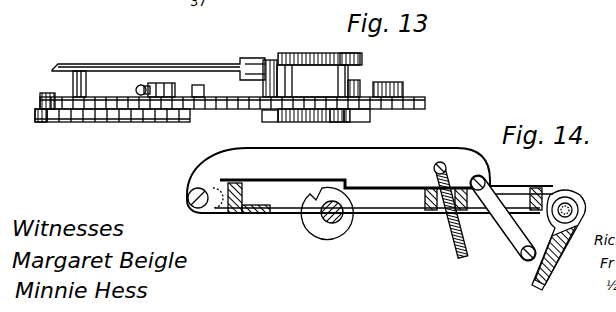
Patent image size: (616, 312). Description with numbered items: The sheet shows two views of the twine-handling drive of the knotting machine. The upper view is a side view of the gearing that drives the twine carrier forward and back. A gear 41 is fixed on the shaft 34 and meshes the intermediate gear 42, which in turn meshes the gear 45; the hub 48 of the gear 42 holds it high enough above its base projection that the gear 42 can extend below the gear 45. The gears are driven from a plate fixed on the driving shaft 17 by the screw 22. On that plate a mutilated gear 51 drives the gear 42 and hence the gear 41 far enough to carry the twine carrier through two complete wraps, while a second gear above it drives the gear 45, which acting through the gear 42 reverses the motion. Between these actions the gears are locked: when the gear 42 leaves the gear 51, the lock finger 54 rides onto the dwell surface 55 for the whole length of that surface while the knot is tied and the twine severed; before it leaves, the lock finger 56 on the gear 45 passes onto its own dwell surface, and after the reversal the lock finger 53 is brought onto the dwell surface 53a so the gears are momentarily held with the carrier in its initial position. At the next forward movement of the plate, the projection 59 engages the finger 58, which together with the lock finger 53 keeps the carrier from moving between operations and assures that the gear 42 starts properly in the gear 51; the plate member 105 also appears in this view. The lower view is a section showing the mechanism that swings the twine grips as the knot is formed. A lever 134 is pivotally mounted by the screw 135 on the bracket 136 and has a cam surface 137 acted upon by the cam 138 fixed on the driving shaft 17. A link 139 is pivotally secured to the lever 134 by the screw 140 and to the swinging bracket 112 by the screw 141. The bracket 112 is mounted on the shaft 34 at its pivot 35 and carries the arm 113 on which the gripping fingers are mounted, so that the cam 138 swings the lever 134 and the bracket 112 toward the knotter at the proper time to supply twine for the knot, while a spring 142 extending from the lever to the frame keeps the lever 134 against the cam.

In FIG. 13, the top plate 105 is at (152, 68).
In FIG. 13, the gear 41 is at (427, 103).
In FIG. 13, the dwell surface 55 is at (130, 124).
In FIG. 13, the screw 22 is at (139, 88).
In FIG. 13, the gear 51 is at (205, 99).
In FIG. 13, the projection 59 is at (284, 58).
In FIG. 13, the finger 58 is at (290, 60).
In FIG. 13, the lock finger 56 is at (362, 62).
In FIG. 13, the gear 45 is at (312, 81).
In FIG. 13, the gear 42 is at (358, 84).
In FIG. 13, the lock finger 53 is at (300, 122).
In FIG. 13, the dwell surface 53a is at (270, 118).
In FIG. 13, the hub 48 is at (335, 122).
In FIG. 13, the lock finger 54 is at (362, 116).
In FIG. 14, the lever 134 is at (370, 180).
In FIG. 14, the screw 135 is at (190, 202).
In FIG. 14, the bracket 136 is at (222, 212).
In FIG. 14, the arm 113 is at (262, 215).
In FIG. 14, the cam 138 is at (312, 214).
In FIG. 14, the driving shaft 17 is at (348, 226).
In FIG. 14, the cam surface 137 is at (349, 192).
In FIG. 14, the spring 142 is at (455, 248).
In FIG. 14, the link 139 is at (500, 222).
In FIG. 14, the screw 140 is at (490, 180).
In FIG. 14, the screw 141 is at (522, 259).
In FIG. 14, the swinging bracket 112 is at (548, 270).
In FIG. 14, the pivot 35 is at (580, 207).
In FIG. 14, the shaft 34 is at (575, 198).